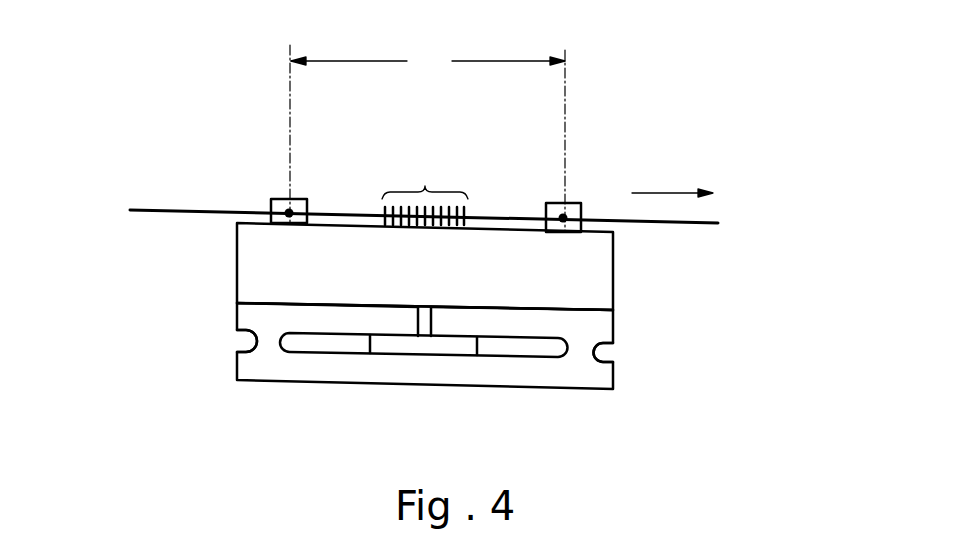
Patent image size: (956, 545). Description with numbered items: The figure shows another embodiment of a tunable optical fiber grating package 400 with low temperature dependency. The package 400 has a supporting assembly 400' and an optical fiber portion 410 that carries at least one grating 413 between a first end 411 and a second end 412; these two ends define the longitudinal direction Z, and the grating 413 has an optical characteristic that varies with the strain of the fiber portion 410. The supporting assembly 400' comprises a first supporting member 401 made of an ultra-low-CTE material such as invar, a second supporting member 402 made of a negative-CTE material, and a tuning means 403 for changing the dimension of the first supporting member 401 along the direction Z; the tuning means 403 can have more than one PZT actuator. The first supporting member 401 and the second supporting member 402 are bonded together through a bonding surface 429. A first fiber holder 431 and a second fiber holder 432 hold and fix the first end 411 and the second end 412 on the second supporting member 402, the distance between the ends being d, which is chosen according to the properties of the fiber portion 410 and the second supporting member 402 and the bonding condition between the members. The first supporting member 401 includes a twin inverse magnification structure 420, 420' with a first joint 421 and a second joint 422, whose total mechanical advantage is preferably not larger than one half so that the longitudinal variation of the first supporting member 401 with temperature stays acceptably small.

The tunable optical fiber grating package 400 is at (410, 247).
The supporting assembly 400' is at (470, 347).
The first supporting member 401 is at (322, 368).
The second supporting member 402 is at (585, 253).
The tuning means 403 is at (438, 345).
The optical fiber portion 410 is at (498, 215).
The first end 411 is at (298, 200).
The second end 412 is at (551, 204).
The grating 413 is at (425, 186).
The twin inverse magnification structure 420 is at (327, 316).
The twin inverse magnification structure 420' is at (522, 320).
The first joint 421 is at (268, 345).
The second joint 422 is at (581, 350).
The bonding surface 429 is at (513, 305).
The first fiber holder 431 is at (277, 200).
The second fiber holder 432 is at (580, 204).